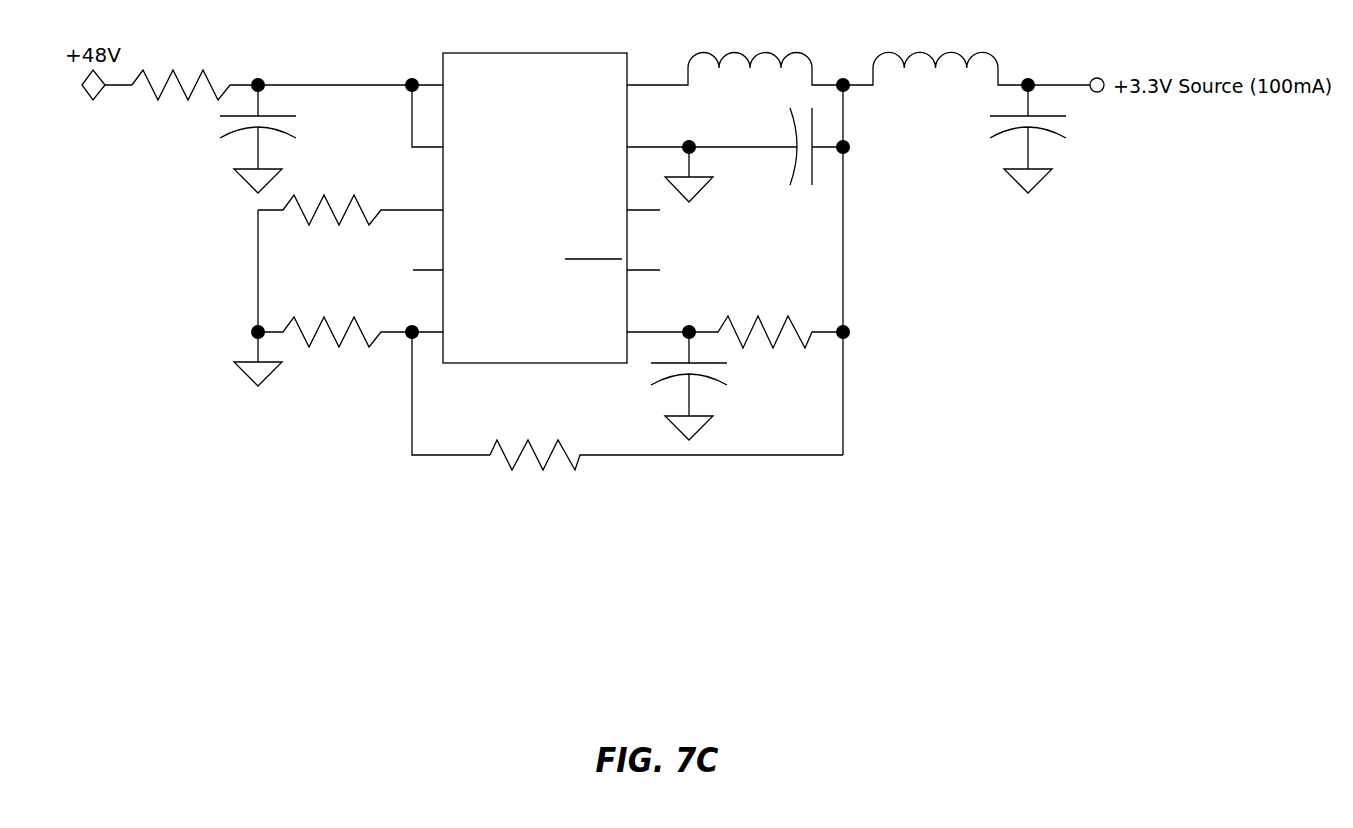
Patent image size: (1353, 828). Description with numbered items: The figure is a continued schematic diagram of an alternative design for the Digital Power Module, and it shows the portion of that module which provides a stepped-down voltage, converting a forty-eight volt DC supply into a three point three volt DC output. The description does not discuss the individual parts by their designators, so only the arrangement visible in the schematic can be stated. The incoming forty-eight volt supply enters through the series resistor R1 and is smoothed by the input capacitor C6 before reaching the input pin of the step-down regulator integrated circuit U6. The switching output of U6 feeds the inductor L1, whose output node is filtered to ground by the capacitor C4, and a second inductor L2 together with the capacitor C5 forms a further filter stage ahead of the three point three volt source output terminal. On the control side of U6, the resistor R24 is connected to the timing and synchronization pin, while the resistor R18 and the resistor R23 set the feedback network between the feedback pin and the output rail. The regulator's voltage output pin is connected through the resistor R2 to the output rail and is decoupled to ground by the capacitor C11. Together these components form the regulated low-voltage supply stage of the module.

The input resistor 4.99 ohm R1 is at (181, 57).
The input capacitor 1uF C6 is at (235, 139).
The MAX17552 buck regulator U6 is at (536, 181).
The inductor 150uH L1 is at (735, 42).
The output capacitor 10uF C4 is at (735, 171).
The inductor 22uH L2 is at (935, 42).
The filter capacitor 10uF C5 is at (998, 139).
The Rt/Sync resistor 191K R24 is at (350, 236).
The feedback resistor 49.9K R18 is at (350, 359).
The output resistor 22.1 ohm R2 is at (735, 355).
The capacitor .22uF C11 is at (663, 386).
The feedback resistor 158K R23 is at (666, 481).